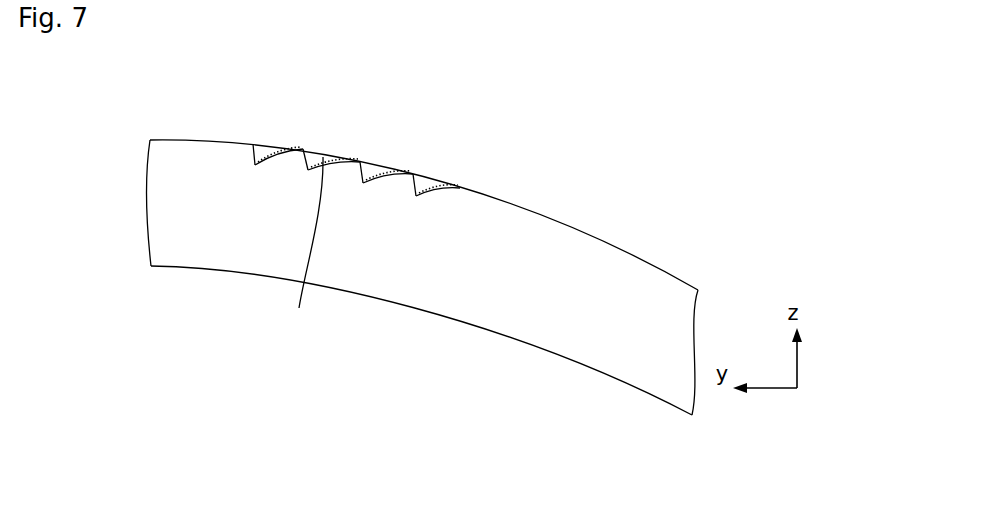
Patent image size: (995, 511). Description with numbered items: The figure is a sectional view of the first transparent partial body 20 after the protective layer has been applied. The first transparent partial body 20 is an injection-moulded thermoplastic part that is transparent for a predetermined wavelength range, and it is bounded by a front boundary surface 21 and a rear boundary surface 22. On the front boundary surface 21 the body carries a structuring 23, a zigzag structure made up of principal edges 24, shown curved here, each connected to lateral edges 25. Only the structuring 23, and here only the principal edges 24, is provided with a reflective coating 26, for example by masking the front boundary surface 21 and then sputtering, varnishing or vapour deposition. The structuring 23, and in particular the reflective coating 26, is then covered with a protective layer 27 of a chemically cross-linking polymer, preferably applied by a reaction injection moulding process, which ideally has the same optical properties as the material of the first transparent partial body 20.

The first transparent partial body 20 is at (185, 208).
The front boundary surface 21 is at (613, 243).
The rear boundary surface 22 is at (450, 315).
The structuring 23 is at (360, 122).
The principal edges 24 is at (283, 152).
The lateral edges 25 is at (311, 167).
The reflective coating 26 is at (262, 146).
The protective layer 27 is at (305, 252).